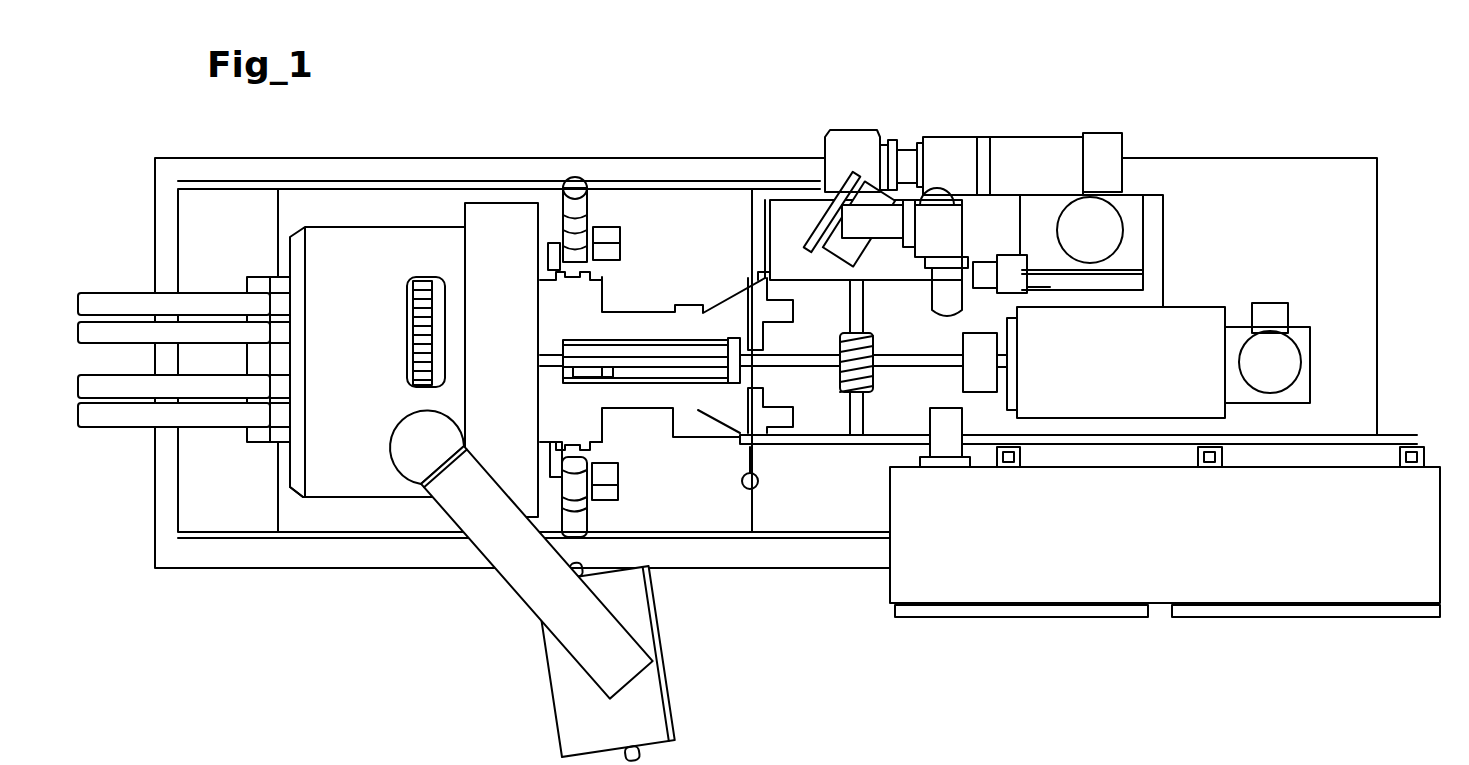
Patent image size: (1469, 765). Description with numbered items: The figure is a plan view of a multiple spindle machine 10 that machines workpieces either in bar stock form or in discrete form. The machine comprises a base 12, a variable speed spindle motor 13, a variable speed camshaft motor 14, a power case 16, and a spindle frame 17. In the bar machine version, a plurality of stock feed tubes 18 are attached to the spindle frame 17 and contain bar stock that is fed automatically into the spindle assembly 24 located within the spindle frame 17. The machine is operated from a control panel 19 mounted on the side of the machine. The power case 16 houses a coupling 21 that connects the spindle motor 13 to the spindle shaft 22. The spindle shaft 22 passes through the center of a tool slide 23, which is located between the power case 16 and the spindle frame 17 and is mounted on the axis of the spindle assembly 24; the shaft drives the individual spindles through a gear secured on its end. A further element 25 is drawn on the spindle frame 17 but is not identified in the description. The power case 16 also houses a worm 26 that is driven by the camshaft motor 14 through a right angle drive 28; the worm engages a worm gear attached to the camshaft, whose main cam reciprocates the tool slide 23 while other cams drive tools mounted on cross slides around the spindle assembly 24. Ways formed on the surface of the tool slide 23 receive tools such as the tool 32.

The multiple spindle machine 10 is at (690, 153).
The base 12 is at (630, 170).
The variable speed spindle motor 13 is at (1120, 374).
The variable speed camshaft motor 14 is at (1040, 148).
The power case 16 is at (800, 218).
The spindle frame 17 is at (330, 245).
The stock feed tubes 18 is at (100, 300).
The control panel 19 is at (572, 703).
The coupling 21 is at (963, 335).
The spindle shaft 22 is at (545, 360).
The tool slide 23 is at (653, 340).
The spindle assembly 24 is at (318, 472).
The gear 25 is at (412, 290).
The worm 26 is at (842, 342).
The right angle drive 28 is at (857, 147).
The tool 32 is at (590, 377).